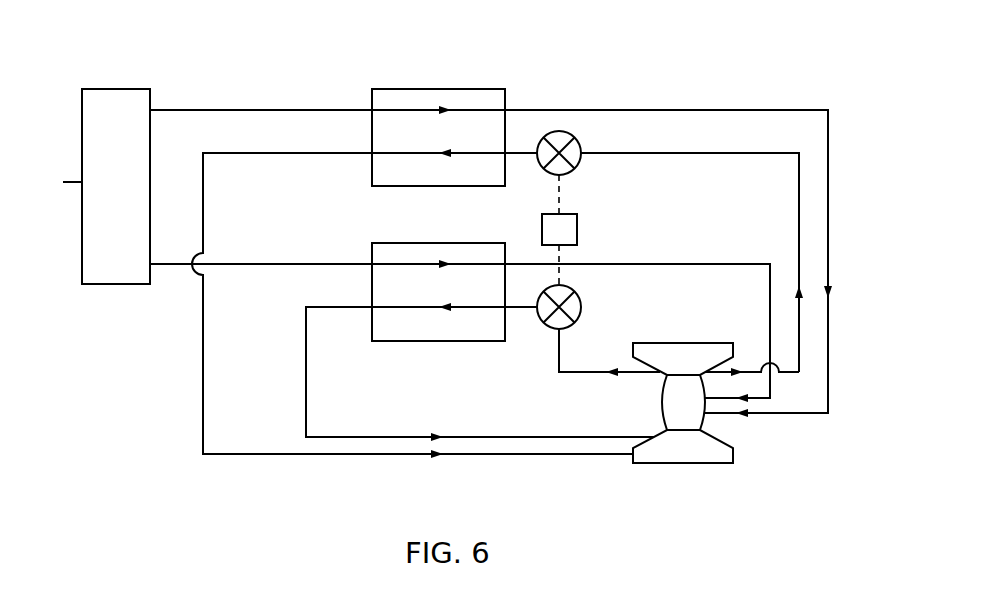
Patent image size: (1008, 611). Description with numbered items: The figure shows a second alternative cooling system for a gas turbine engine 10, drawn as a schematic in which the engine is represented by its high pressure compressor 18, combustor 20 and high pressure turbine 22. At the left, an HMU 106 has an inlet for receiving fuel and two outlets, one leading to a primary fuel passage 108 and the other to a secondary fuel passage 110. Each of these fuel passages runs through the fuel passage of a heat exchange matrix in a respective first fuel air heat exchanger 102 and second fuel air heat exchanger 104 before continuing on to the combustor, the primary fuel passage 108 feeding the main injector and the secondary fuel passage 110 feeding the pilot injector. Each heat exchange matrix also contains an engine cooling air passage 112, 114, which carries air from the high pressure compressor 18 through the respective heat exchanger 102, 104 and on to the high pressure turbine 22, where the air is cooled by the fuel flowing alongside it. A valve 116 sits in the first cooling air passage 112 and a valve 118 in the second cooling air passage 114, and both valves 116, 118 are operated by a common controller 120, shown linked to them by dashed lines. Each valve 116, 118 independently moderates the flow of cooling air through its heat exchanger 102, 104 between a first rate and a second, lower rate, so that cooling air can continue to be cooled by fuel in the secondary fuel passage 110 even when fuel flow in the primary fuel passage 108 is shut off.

The gas turbine engine 10 is at (690, 389).
The high pressure compressor 18 is at (633, 352).
The combustor 20 is at (670, 397).
The high pressure turbine 22 is at (633, 460).
The first fuel air heat exchanger 102 is at (397, 89).
The second fuel air heat exchanger 104 is at (414, 342).
The HMU 106 is at (123, 89).
The primary fuel passage 108 is at (207, 109).
The secondary fuel passage 110 is at (178, 265).
The engine cooling air passage 112 is at (633, 152).
The engine cooling air passage 114 is at (573, 374).
The valve 116 is at (560, 131).
The valve 118 is at (582, 307).
The common controller 120 is at (578, 225).